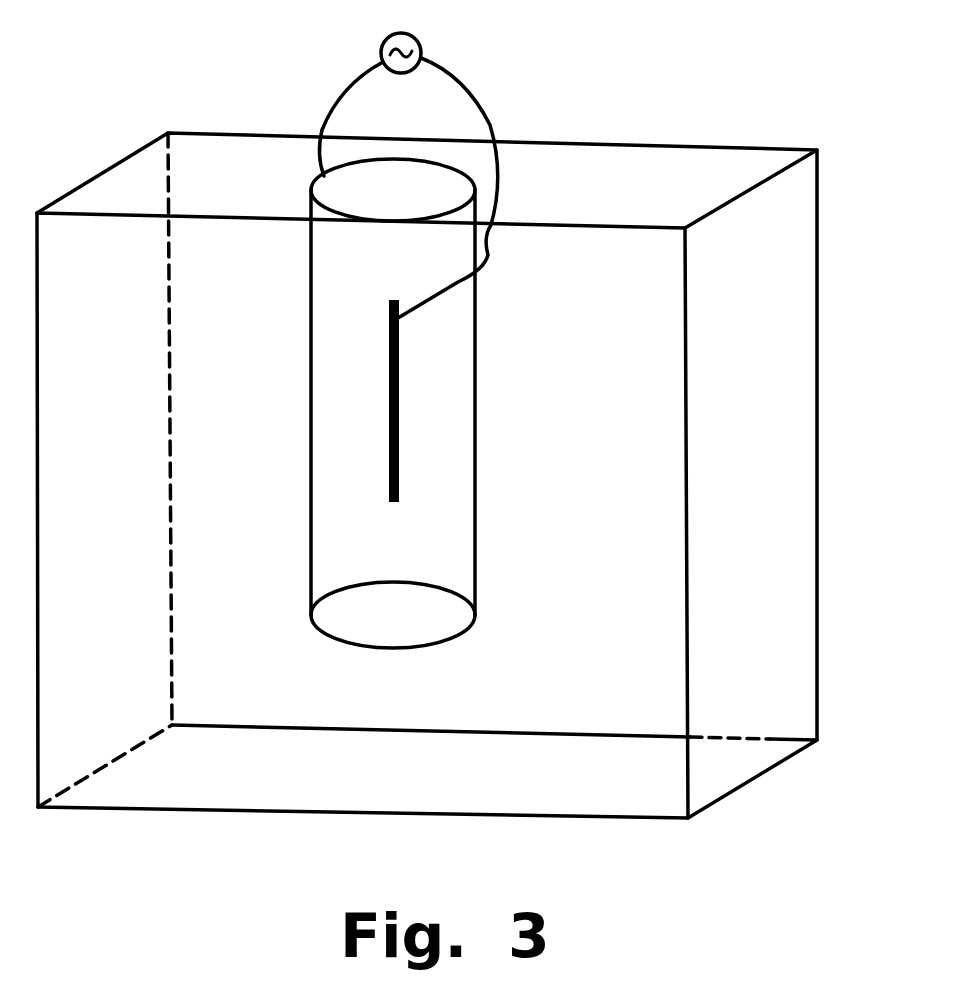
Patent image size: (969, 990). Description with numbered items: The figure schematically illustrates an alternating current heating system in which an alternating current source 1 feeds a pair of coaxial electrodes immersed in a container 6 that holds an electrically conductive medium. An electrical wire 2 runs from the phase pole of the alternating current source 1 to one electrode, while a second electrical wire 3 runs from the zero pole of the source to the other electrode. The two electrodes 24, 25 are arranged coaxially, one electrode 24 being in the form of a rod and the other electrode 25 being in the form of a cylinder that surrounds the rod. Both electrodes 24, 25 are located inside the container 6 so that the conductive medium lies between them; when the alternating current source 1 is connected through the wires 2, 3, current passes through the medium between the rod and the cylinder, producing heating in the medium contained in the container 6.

The alternating current source 1 is at (418, 38).
The electrical wire 2 is at (478, 105).
The electrical wire 3 is at (340, 90).
The container 6 is at (818, 392).
The electrode 24 is at (398, 372).
The electrode 25 is at (477, 470).